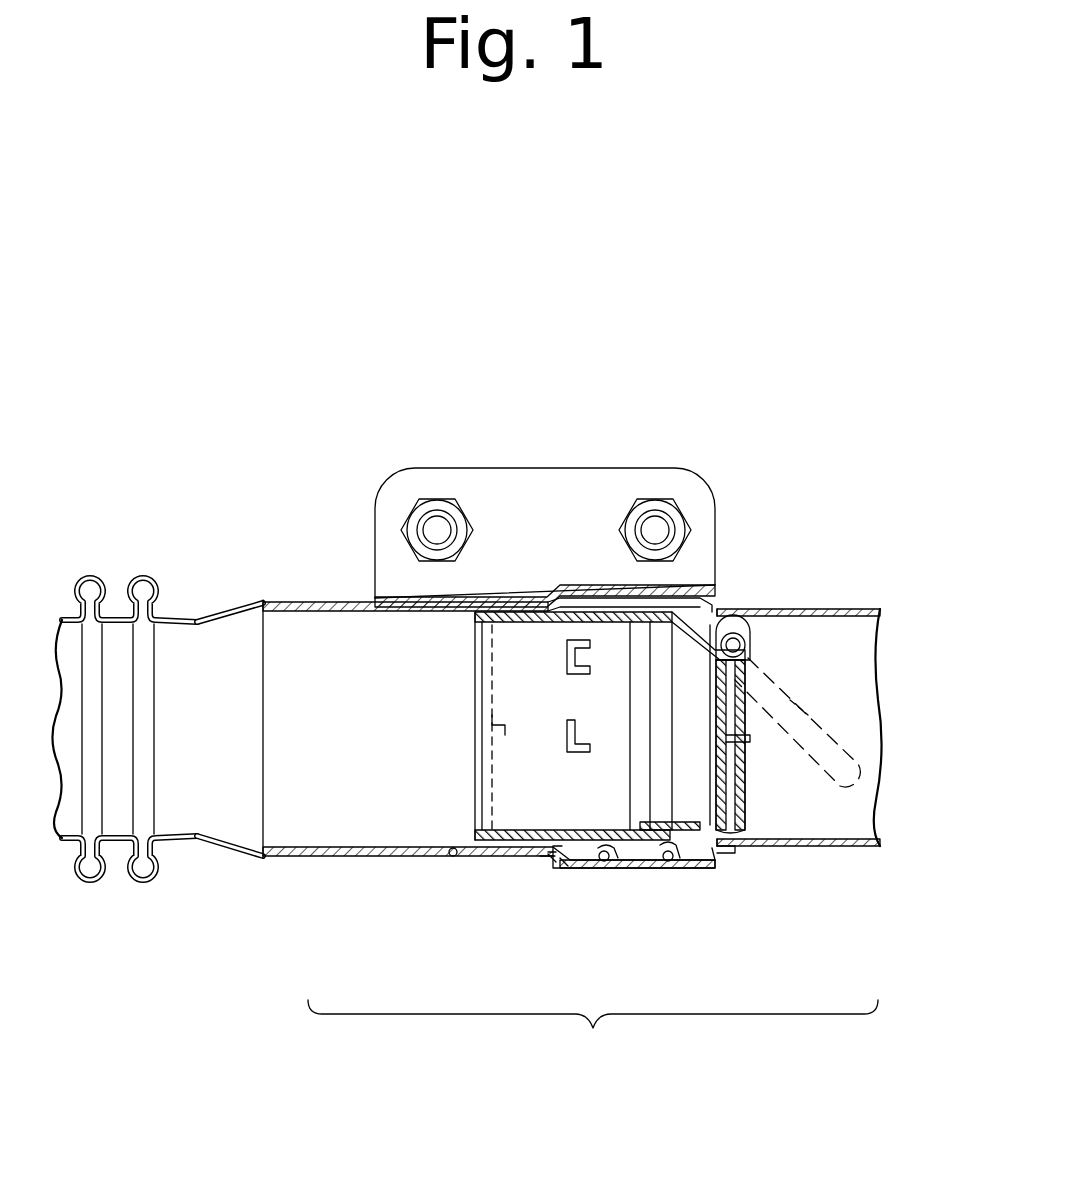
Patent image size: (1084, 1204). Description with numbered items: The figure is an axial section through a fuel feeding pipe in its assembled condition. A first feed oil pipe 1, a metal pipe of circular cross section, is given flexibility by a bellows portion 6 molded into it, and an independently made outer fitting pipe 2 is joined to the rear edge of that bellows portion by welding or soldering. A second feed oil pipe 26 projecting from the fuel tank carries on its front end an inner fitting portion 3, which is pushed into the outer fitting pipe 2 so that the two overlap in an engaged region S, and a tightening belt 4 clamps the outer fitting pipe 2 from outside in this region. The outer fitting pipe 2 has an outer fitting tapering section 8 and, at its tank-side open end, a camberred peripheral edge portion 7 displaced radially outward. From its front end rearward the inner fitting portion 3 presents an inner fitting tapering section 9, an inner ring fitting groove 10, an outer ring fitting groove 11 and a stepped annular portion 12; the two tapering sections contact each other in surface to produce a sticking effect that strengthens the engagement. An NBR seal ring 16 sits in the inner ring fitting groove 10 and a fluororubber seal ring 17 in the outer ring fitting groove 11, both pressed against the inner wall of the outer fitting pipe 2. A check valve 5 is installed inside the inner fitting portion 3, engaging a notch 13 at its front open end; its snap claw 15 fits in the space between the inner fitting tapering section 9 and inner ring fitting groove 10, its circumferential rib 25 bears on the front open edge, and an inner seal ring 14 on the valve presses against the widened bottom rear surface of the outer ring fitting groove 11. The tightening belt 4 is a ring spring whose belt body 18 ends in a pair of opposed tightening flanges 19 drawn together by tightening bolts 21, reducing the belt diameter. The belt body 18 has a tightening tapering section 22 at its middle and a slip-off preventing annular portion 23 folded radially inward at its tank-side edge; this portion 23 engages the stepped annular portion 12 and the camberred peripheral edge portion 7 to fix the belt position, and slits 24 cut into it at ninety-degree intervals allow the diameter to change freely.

The first feed oil pipe 1 is at (192, 614).
The outer fitting pipe 2 is at (398, 749).
The inner fitting portion 3 is at (868, 670).
The tightening belt 4 is at (400, 490).
The check valve 5 is at (585, 805).
The bellows portion 6 is at (140, 580).
The camberred peripheral edge portion 7 is at (693, 867).
The outer fitting tapering section 8 is at (547, 860).
The inner fitting tapering section 9 is at (552, 860).
The inner ring fitting groove 10 is at (563, 863).
The outer ring fitting groove 11 is at (610, 865).
The stepped annular portion 12 is at (730, 853).
The notch 13 is at (505, 725).
The inner seal ring 14 is at (672, 865).
The snap claw 15 is at (558, 850).
The NBR seal ring 16 is at (602, 863).
The fluororubber seal ring 17 is at (647, 865).
The belt body 18 is at (395, 597).
The tightening flanges 19 is at (510, 549).
The tightening bolts 21 is at (437, 500).
The tightening tapering section 22 is at (553, 858).
The slip-off preventing annular portion 23 is at (717, 860).
The slits 24 is at (723, 600).
The circumferential rib 25 is at (453, 858).
The second feed oil pipe 26 is at (827, 605).
The engaged region S is at (593, 1033).